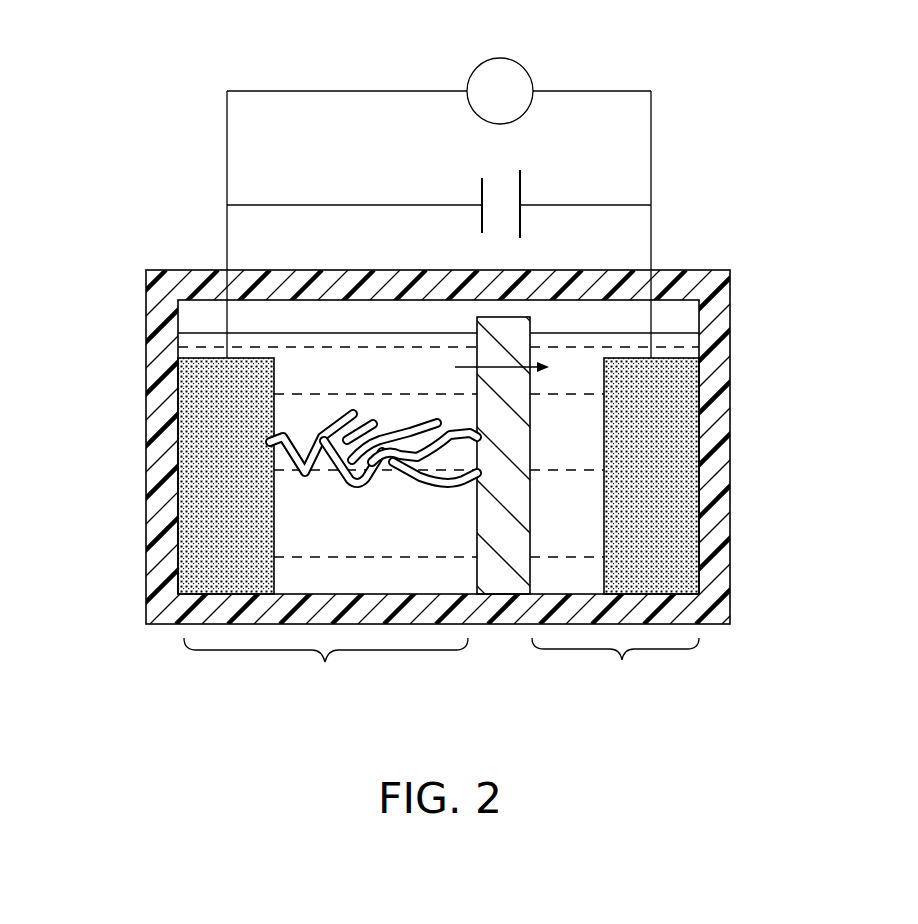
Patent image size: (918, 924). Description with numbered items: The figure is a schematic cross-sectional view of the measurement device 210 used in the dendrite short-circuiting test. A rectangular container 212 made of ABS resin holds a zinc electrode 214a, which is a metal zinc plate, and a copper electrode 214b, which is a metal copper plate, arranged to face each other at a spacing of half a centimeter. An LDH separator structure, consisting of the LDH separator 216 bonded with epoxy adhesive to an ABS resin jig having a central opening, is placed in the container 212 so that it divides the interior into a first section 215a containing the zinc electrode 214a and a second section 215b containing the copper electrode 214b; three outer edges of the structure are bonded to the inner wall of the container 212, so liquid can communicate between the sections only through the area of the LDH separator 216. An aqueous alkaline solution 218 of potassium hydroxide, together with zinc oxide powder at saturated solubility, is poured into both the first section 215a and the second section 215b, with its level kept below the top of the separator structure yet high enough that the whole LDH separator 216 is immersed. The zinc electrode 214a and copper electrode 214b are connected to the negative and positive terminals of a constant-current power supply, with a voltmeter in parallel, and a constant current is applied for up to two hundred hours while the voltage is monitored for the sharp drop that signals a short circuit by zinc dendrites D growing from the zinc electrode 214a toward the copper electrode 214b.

The measurement device 210 is at (459, 459).
The container 212 is at (713, 337).
The zinc electrode 214a is at (215, 512).
The copper electrode 214b is at (650, 499).
The first section 215a is at (326, 669).
The second section 215b is at (615, 667).
The LDH separator 216 is at (505, 578).
The aqueous alkaline solution 218 is at (295, 374).
The dendrite D is at (340, 412).